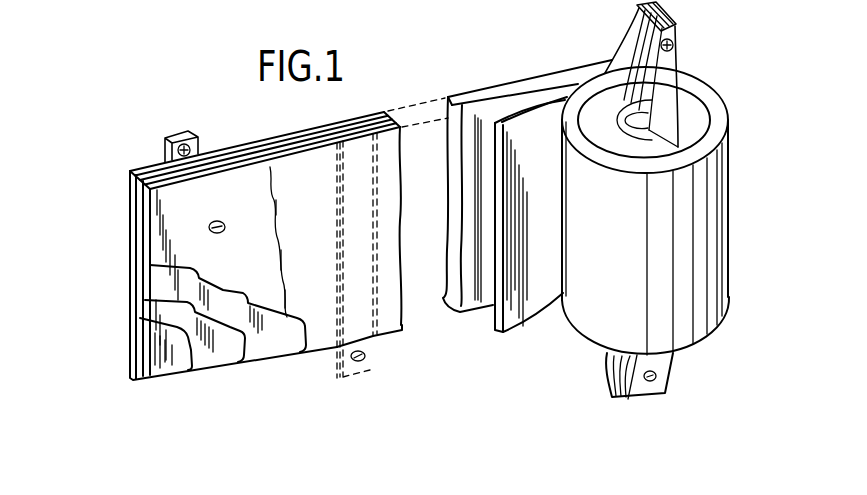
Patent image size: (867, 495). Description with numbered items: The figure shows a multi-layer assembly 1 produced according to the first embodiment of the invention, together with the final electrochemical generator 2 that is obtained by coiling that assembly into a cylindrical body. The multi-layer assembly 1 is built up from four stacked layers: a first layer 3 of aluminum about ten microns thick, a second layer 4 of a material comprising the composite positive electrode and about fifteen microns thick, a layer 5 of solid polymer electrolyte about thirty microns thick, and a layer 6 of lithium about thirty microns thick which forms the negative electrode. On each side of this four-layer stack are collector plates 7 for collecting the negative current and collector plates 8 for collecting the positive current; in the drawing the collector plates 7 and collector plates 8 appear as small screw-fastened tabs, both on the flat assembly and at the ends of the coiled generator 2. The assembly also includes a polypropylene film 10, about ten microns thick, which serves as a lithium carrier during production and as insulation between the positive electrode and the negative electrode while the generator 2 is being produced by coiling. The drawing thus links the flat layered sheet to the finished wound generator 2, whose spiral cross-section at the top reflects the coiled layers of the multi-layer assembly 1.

The multi-layer assembly 1 is at (133, 276).
The electrochemical generator 2 is at (728, 196).
The first layer 3 is at (163, 375).
The second layer 4 is at (213, 367).
The layer of solid polymer electrolyte 5 is at (261, 358).
The layer of lithium 6 is at (322, 350).
The collector plates 7 is at (364, 363).
The collector plates 8 is at (178, 133).
The polypropylene film 10 is at (531, 310).